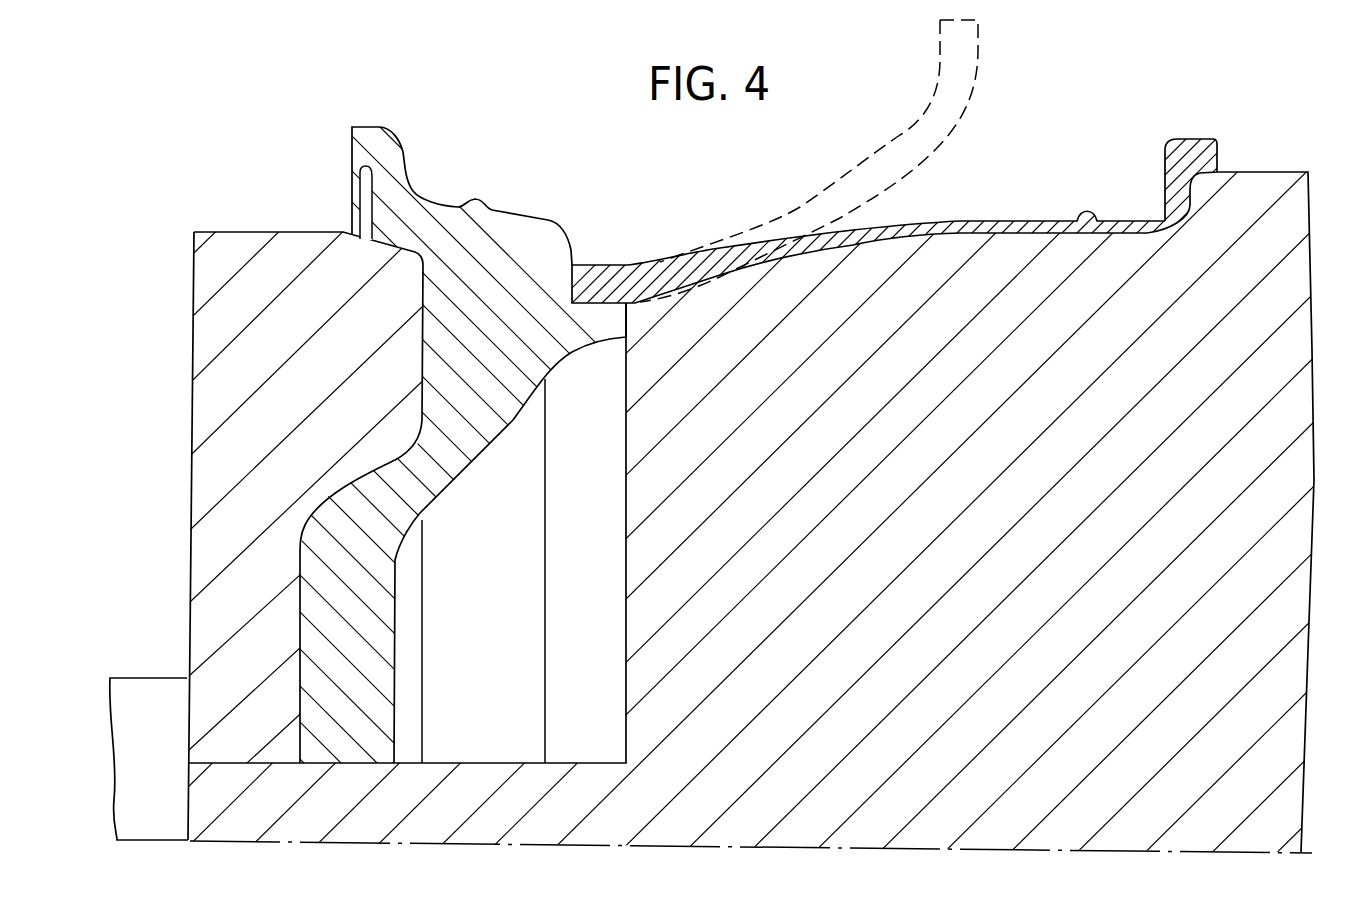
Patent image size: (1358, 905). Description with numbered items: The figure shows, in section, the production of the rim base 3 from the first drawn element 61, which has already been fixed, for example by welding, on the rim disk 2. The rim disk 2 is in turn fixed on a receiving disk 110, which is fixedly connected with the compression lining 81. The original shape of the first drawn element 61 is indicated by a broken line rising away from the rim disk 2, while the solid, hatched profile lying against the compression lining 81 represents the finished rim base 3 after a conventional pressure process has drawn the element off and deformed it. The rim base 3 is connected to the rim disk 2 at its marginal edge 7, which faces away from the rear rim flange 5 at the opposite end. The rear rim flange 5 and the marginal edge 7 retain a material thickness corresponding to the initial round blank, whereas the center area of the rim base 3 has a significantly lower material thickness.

The rim disk 2 is at (378, 640).
The rim base 3 is at (1013, 203).
The rear rim flange 5 is at (1195, 131).
The marginal edge 7 is at (615, 243).
The first drawn element 61 is at (880, 145).
The compression lining 81 is at (1275, 436).
The receiving disk 110 is at (207, 408).